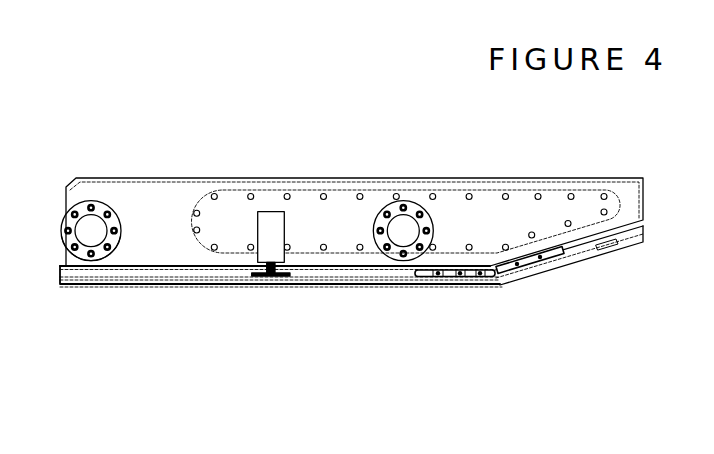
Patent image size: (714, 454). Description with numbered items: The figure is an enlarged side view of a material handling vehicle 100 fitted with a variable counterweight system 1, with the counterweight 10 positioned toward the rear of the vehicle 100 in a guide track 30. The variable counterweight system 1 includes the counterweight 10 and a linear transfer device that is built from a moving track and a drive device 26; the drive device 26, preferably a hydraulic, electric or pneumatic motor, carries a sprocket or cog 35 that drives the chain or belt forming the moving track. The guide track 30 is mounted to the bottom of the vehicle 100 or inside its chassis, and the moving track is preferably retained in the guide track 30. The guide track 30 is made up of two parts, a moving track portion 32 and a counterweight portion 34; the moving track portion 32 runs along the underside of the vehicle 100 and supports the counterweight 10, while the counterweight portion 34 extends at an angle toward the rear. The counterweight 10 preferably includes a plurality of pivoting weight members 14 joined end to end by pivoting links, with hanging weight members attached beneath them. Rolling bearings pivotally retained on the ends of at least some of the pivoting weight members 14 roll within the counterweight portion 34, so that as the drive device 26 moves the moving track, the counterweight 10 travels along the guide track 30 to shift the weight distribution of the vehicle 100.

The variable counterweight system 1 is at (494, 349).
The material handling vehicle 100 is at (170, 167).
The drive device 26 is at (272, 223).
The sprocket or cog 35 is at (259, 277).
The moving track portion 32 is at (197, 285).
The counterweight 10 is at (445, 287).
The guide track 30 is at (135, 287).
The counterweight portion 34 is at (595, 244).
The pivoting weight members 14 is at (507, 280).